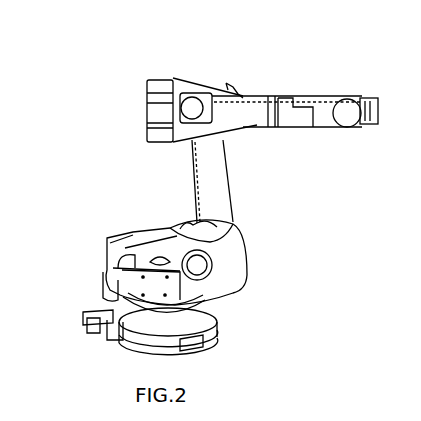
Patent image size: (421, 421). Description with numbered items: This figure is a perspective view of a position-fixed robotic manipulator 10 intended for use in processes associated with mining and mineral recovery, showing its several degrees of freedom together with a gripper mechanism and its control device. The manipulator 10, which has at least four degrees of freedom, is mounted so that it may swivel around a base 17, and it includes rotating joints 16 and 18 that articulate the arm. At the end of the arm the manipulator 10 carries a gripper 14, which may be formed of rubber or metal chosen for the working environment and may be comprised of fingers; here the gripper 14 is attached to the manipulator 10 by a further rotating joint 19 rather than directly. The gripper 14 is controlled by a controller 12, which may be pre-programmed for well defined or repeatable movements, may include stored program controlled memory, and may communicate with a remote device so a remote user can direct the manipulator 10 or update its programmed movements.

The robotic manipulator 10 is at (180, 39).
The controller 12 is at (128, 248).
The gripper 14 is at (317, 119).
The rotating joint 16 is at (214, 252).
The base 17 is at (185, 323).
The rotating joint 18 is at (205, 182).
The rotating joint 19 is at (247, 102).